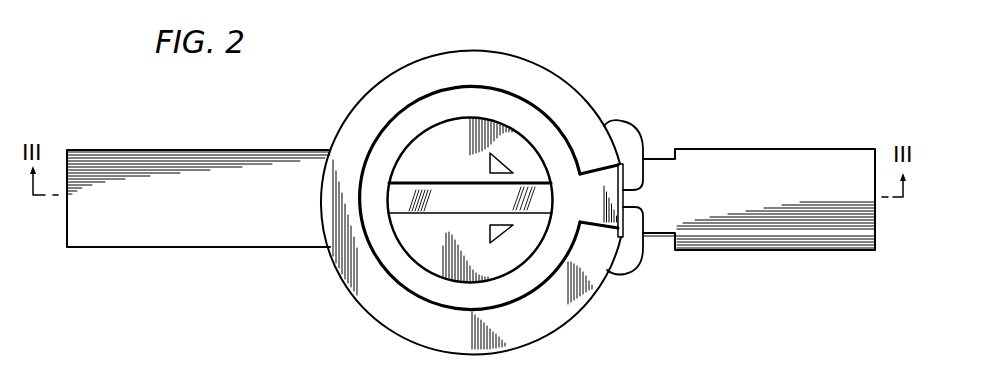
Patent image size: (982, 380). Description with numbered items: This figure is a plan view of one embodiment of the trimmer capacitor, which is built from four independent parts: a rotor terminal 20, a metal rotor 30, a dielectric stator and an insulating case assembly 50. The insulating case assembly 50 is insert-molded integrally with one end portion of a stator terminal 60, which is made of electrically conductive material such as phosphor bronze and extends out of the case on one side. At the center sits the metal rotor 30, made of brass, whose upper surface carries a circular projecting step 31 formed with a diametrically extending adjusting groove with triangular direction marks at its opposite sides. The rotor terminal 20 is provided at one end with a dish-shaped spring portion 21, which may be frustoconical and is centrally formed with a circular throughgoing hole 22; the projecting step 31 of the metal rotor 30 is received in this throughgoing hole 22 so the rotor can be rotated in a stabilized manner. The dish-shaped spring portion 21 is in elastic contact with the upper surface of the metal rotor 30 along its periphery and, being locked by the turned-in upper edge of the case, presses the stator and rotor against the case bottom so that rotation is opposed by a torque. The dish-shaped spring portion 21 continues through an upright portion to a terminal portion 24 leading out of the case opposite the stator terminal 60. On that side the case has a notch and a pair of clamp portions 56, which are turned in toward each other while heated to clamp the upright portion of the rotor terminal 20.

The rotor terminal 20 is at (702, 149).
The dish-shaped spring portion 21 is at (438, 103).
The throughgoing hole 22 is at (402, 148).
The terminal portion 24 is at (768, 167).
The metal rotor 30 is at (533, 143).
The projecting step 31 is at (490, 117).
The insulating case assembly 50 is at (343, 278).
The clamp portions 56 is at (628, 162).
The stator terminal 60 is at (207, 150).